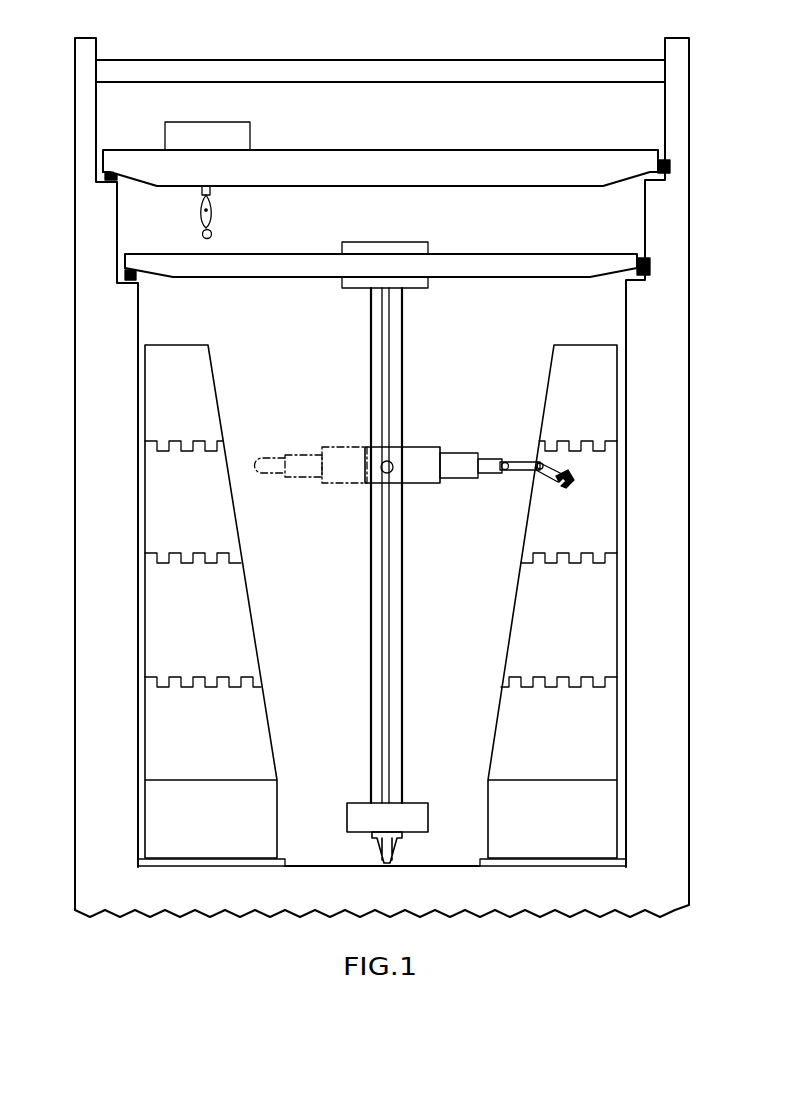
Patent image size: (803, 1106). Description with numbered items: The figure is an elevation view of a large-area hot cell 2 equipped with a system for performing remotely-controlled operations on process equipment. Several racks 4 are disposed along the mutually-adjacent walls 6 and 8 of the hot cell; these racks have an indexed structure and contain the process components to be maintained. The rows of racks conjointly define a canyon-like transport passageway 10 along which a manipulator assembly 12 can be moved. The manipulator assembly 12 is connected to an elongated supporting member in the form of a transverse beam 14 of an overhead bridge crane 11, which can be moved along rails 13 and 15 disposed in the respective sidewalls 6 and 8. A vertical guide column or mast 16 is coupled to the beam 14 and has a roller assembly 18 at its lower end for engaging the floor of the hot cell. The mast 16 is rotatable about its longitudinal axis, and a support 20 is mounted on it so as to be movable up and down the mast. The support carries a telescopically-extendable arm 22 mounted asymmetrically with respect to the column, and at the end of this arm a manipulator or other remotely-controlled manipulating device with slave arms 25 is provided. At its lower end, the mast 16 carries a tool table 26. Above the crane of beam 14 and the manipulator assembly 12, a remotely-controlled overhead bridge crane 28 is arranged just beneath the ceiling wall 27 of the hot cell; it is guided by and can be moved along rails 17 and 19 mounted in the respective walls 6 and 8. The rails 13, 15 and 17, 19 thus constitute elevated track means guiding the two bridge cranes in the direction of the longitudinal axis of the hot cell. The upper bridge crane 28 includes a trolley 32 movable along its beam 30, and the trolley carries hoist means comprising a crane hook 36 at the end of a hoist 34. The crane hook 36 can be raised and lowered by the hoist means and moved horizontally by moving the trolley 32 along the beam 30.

The large-area hot cell 2 is at (306, 870).
The racks 4 is at (257, 693).
The wall 6 is at (107, 390).
The wall 8 is at (652, 365).
The transport passageway 10 is at (332, 760).
The overhead bridge crane 11 is at (319, 251).
The manipulator assembly 12 is at (407, 323).
The rail 13 is at (120, 275).
The transverse beam 14 is at (513, 268).
The rail 15 is at (650, 275).
The vertical guide column or mast 16 is at (370, 352).
The rail 17 is at (110, 177).
The roller assembly 18 is at (383, 866).
The rail 19 is at (667, 177).
The support 20 is at (362, 483).
The telescopically-extendable arm 22 is at (428, 487).
The slave arms 25 is at (548, 477).
The tool table 26 is at (413, 810).
The ceiling wall 27 is at (398, 72).
The remotely-controlled overhead bridge crane 28 is at (357, 148).
The beam 30 is at (480, 172).
The trolley 32 is at (247, 135).
The hoist 34 is at (210, 193).
The crane hook 36 is at (202, 235).